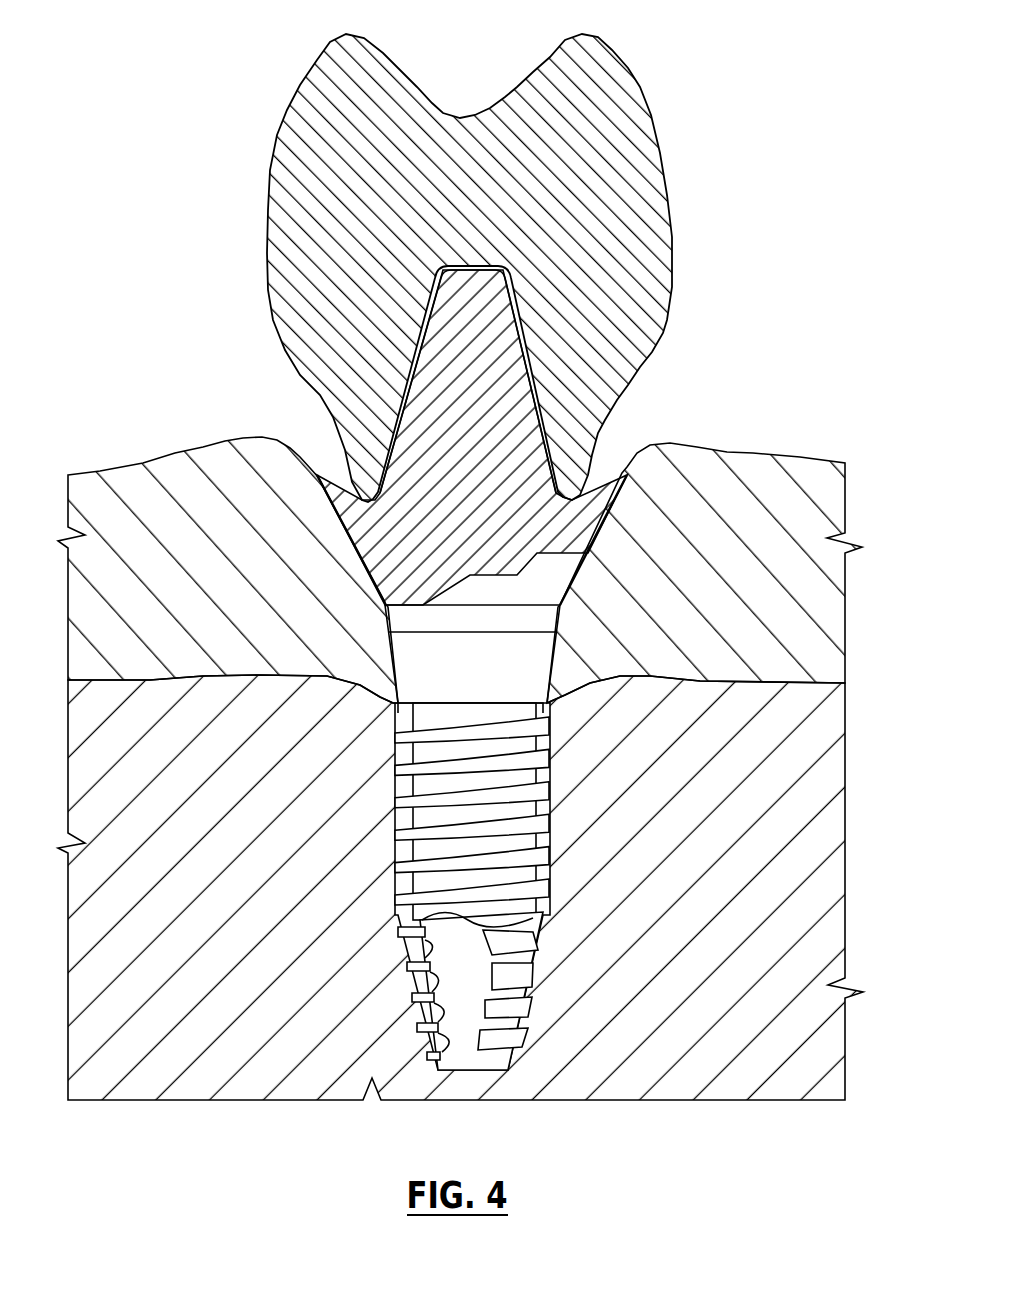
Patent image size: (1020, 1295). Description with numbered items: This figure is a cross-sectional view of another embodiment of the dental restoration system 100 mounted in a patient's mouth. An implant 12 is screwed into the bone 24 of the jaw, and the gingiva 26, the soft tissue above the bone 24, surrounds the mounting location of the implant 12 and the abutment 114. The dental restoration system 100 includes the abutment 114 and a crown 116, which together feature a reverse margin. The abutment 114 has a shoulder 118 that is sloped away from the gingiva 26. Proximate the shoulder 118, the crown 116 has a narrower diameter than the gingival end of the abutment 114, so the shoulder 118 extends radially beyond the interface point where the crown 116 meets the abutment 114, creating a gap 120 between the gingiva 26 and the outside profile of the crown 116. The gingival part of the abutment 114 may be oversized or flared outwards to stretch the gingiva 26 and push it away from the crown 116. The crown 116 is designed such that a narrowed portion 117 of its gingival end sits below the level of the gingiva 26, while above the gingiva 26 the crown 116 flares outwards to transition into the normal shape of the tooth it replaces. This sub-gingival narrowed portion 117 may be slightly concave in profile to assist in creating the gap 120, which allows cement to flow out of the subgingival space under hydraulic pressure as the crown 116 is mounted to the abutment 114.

The dental restoration system 100 is at (805, 134).
The implant 12 is at (487, 810).
The bone 24 is at (220, 783).
The gingiva 26 is at (155, 538).
The abutment 114 is at (443, 522).
The crown 116 is at (489, 213).
The narrowed portion 117 is at (332, 472).
The shoulder 118 is at (381, 511).
The gap 120 is at (324, 417).